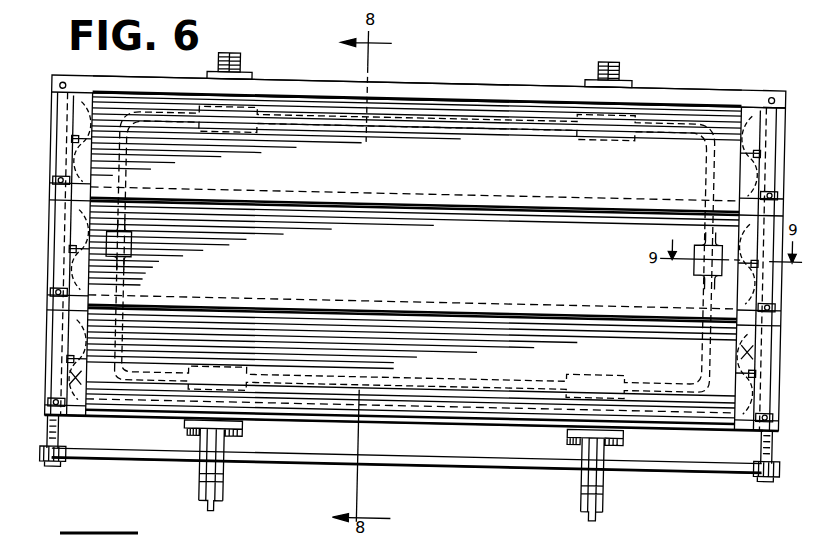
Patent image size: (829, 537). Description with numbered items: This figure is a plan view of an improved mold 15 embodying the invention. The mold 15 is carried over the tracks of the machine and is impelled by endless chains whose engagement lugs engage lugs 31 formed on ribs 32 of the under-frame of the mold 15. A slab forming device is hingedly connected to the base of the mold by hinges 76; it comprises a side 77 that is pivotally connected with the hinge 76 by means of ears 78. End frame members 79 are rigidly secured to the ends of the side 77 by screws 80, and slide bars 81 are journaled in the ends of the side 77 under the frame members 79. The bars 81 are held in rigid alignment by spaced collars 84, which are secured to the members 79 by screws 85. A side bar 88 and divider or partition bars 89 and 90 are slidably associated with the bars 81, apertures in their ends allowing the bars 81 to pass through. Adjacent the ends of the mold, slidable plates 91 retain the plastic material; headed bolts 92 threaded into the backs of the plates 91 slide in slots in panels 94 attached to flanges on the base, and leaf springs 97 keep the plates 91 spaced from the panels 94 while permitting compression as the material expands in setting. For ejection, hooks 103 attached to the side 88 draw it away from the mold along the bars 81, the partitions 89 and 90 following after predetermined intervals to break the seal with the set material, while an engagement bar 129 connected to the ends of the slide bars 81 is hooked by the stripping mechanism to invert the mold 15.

The mold 15 is at (512, 138).
The lug 31 is at (133, 248).
The rib 32 is at (705, 164).
The hinge 76 is at (246, 55).
The side 77 is at (476, 84).
The ear 78 is at (226, 48).
The end frame member 79 is at (57, 142).
The screw 80 is at (774, 82).
The slide bar 81 is at (66, 439).
The collar 84 is at (58, 286).
The screw 85 is at (58, 182).
The side bar 88 is at (450, 411).
The partition bar 89 is at (393, 293).
The partition bar 90 is at (481, 189).
The slidable plate 91 is at (746, 136).
The headed bolt 92 is at (58, 345).
The panel 94 is at (749, 86).
The leaf spring 97 is at (57, 360).
The hook 103 is at (224, 488).
The engagement bar 129 is at (407, 463).